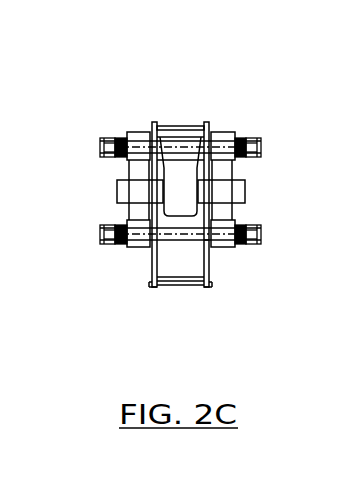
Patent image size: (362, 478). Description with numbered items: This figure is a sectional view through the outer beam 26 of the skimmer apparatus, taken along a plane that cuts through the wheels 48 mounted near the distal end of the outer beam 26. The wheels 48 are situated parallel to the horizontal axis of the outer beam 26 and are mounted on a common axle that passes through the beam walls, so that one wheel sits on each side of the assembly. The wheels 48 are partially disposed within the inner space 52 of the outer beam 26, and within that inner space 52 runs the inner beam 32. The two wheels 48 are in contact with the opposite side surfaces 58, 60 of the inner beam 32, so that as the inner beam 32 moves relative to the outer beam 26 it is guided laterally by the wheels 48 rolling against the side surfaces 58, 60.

The outer beam 26 is at (175, 286).
The inner beam 32 is at (178, 172).
The wheels 48 is at (117, 192).
The inner space 52 is at (200, 170).
The side surface 58 is at (155, 122).
The side surface 60 is at (206, 122).